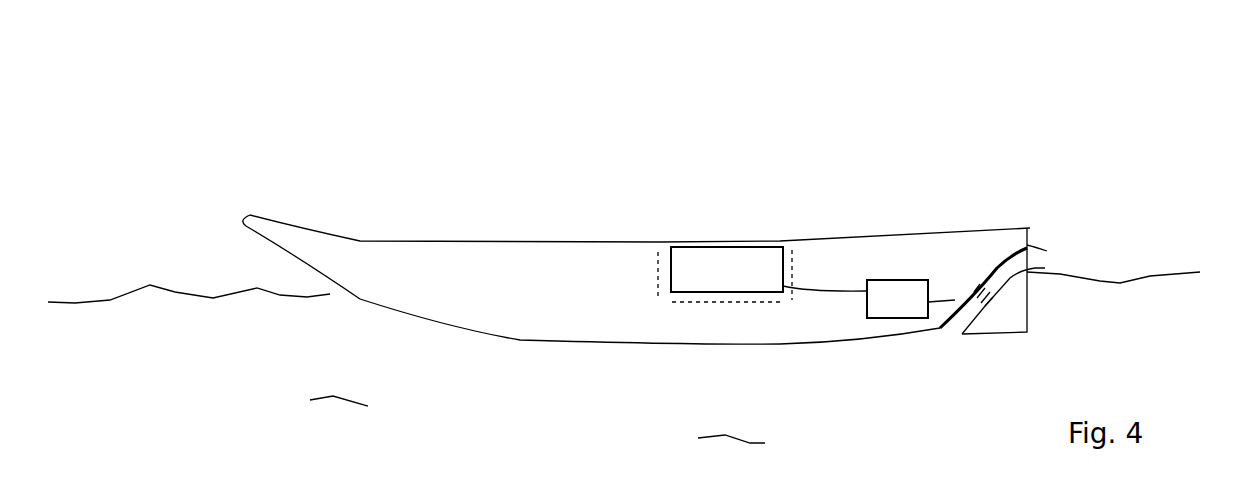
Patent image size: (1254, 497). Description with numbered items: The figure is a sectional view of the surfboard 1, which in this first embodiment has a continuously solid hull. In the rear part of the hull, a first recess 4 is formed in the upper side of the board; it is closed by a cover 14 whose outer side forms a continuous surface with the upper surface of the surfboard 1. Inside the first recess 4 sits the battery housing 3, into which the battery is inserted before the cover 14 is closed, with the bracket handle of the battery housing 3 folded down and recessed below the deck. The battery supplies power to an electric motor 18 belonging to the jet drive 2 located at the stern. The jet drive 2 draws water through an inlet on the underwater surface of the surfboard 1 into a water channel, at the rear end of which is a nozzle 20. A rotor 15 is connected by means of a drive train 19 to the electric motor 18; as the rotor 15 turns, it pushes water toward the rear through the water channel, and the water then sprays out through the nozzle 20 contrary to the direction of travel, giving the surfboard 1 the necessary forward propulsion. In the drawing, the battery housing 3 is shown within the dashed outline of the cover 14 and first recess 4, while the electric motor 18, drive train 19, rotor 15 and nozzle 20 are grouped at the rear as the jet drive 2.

The surfboard 1 is at (427, 283).
The jet drive 2 is at (945, 340).
The battery housing 3 is at (756, 270).
The first recess 4 is at (662, 298).
The cover 14 is at (708, 240).
The rotor 15 is at (983, 300).
The electric motor 18 is at (891, 295).
The drive train 19 is at (953, 300).
The nozzle 20 is at (1040, 257).